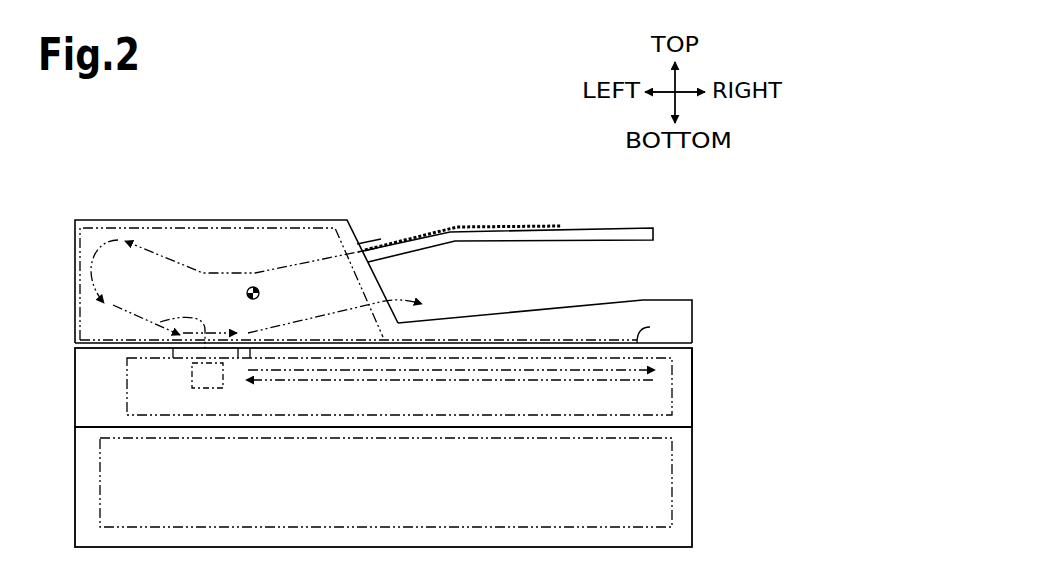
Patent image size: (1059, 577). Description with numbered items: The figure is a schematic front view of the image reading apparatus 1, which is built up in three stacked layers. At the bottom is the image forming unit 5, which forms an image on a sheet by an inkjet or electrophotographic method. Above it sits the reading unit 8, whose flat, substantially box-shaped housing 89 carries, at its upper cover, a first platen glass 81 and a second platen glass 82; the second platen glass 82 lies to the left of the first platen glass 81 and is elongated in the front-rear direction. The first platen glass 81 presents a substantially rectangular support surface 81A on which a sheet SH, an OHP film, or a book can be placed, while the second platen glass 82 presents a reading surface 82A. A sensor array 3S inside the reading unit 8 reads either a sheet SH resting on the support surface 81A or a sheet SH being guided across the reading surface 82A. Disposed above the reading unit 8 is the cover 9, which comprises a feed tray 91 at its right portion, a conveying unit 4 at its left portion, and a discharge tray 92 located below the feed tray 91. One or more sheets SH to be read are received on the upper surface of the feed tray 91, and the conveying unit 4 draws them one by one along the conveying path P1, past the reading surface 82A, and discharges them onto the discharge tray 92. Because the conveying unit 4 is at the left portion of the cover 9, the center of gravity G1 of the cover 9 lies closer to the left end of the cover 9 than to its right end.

The image reading apparatus 1 is at (353, 190).
The conveying unit 4 is at (193, 226).
The image forming unit 5 is at (72, 517).
The reading unit 8 is at (72, 407).
The cover 9 is at (72, 230).
The sensor array 3S is at (213, 389).
The first platen glass 81 is at (663, 361).
The support surface 81A is at (650, 327).
The second platen glass 82 is at (180, 362).
The reading surface 82A is at (160, 322).
The housing 89 is at (689, 406).
The feed tray 91 is at (616, 227).
The discharge tray 92 is at (597, 300).
The center of gravity G1 is at (260, 293).
The conveying path P1 is at (351, 311).
The sheet SH is at (498, 225).